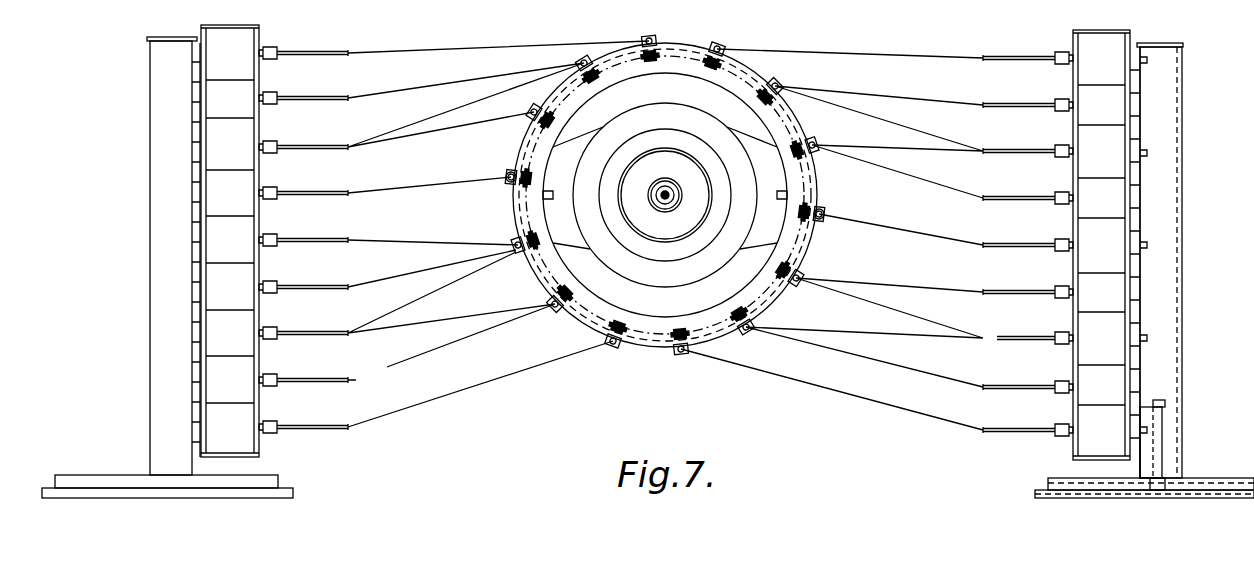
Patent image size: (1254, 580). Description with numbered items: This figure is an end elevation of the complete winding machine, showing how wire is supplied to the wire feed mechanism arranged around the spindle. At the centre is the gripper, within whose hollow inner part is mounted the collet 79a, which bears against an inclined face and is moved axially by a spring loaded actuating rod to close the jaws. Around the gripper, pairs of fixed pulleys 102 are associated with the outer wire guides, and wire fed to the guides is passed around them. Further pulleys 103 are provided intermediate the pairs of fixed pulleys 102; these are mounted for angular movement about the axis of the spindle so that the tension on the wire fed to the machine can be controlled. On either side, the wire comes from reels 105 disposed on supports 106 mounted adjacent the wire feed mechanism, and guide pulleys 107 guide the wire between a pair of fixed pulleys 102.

The collet 79a is at (666, 197).
The fixed pulleys 102 is at (526, 239).
The further pulleys 103 is at (567, 292).
The reels 105 is at (238, 190).
The supports 106 is at (167, 207).
The guide pulleys 107 is at (507, 180).